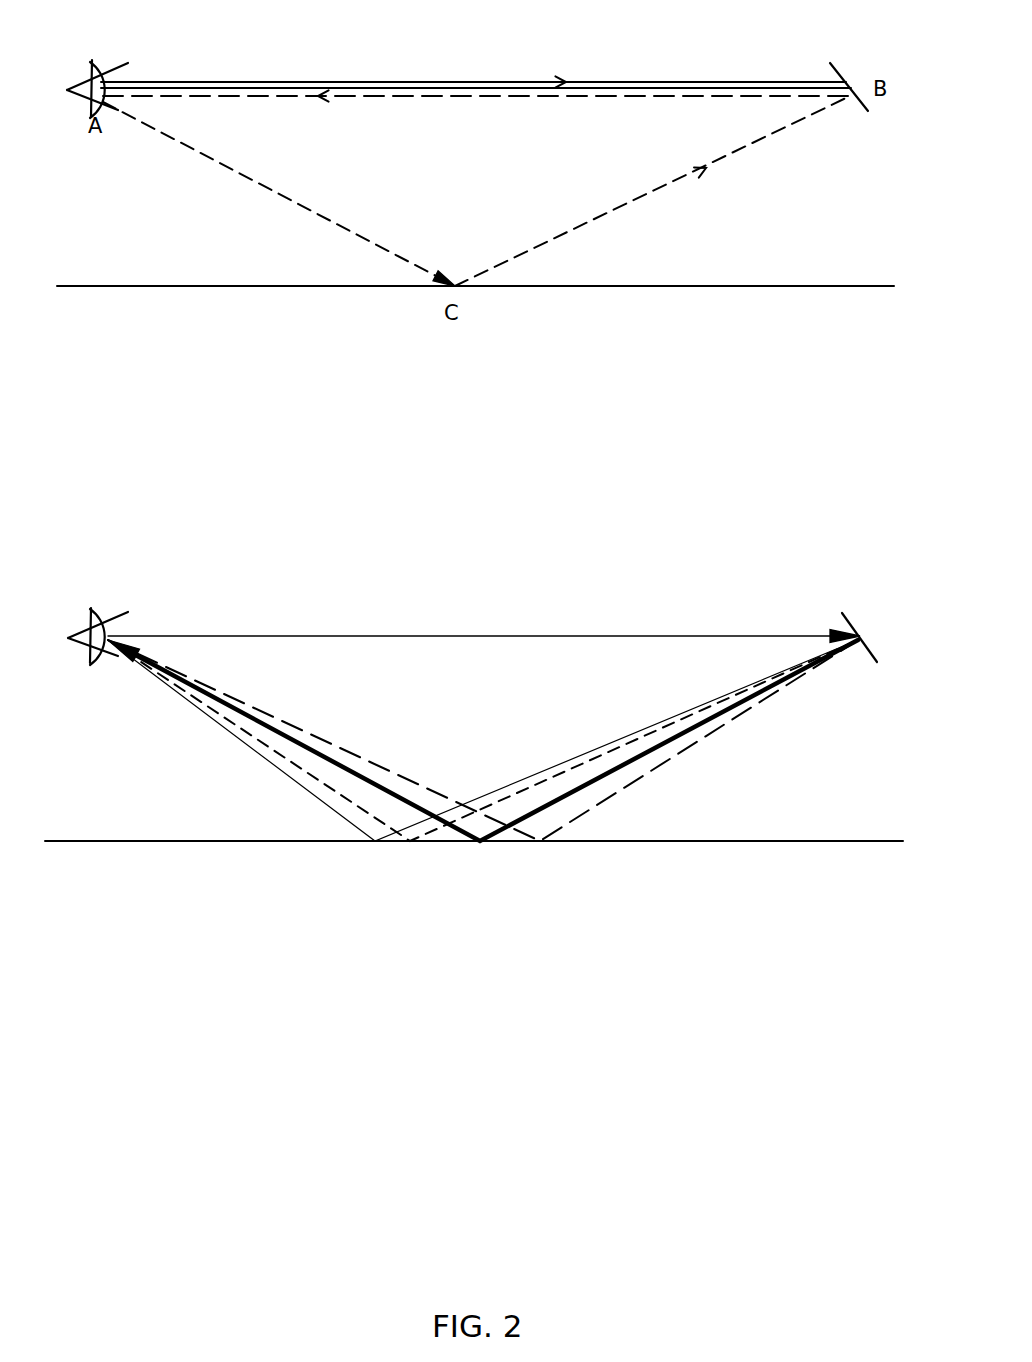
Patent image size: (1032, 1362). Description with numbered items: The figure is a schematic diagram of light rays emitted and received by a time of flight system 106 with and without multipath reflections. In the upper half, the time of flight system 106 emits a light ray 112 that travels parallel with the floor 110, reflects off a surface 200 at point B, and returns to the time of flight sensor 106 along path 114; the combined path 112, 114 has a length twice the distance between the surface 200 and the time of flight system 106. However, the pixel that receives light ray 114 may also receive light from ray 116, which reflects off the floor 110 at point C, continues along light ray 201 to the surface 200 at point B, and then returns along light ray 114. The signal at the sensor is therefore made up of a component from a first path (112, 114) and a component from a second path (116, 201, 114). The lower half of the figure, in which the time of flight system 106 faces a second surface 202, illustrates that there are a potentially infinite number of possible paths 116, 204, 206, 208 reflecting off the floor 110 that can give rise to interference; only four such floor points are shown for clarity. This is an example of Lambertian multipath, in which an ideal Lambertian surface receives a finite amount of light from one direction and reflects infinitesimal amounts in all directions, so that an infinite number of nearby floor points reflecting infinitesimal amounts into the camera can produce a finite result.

The time of flight system 106 is at (92, 76).
The light ray 112 is at (365, 82).
The return path 114 is at (395, 97).
The light ray 116 is at (282, 188).
The light ray 201 is at (618, 209).
The surface 200 is at (840, 74).
The second transducer 202 is at (858, 632).
The path 204 is at (402, 774).
The path 206 is at (275, 750).
The path 208 is at (317, 800).
The floor 110 is at (593, 287).